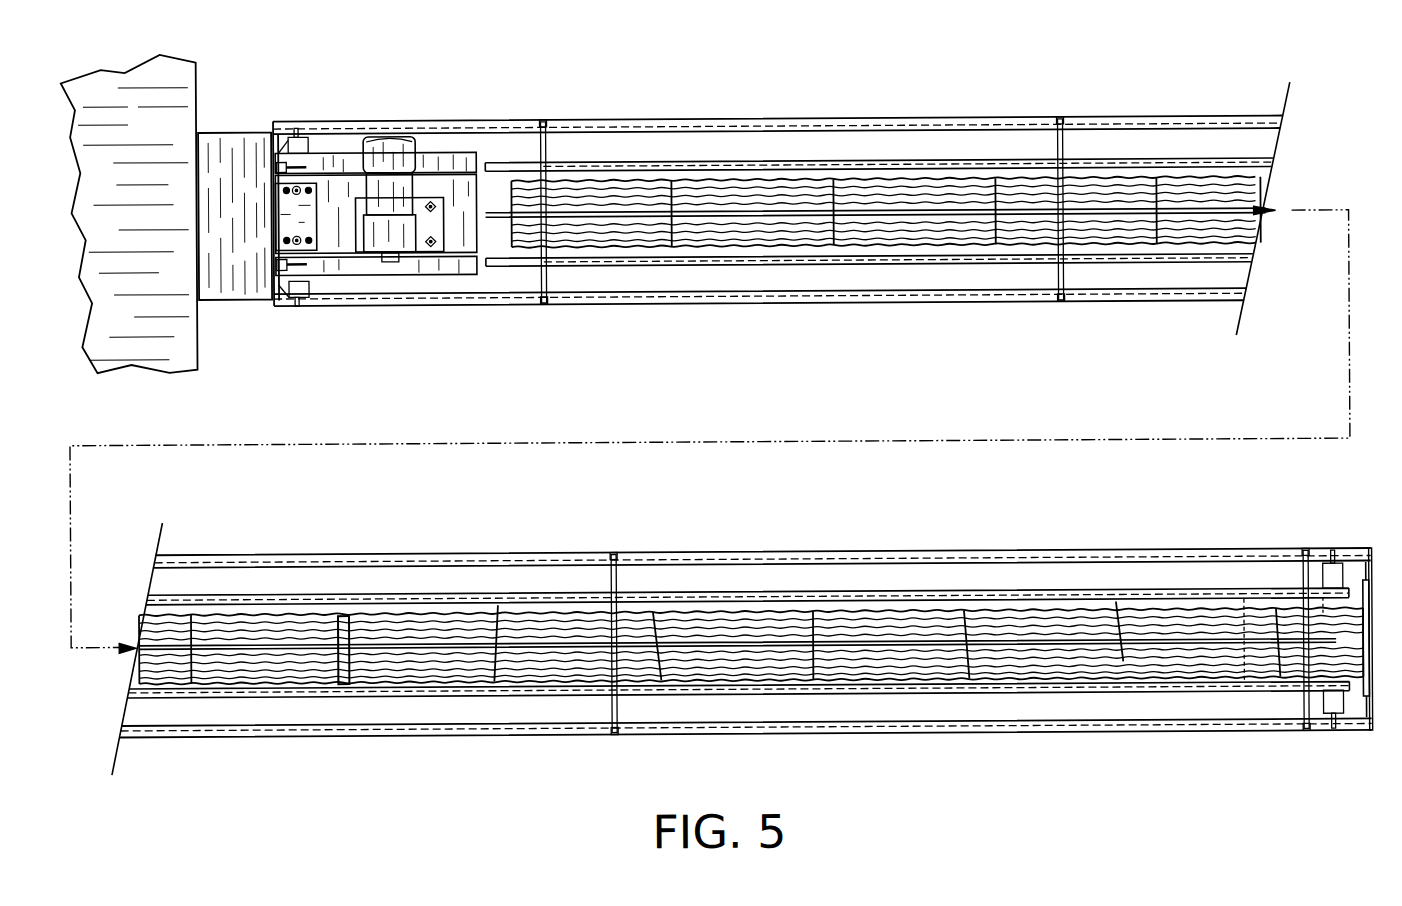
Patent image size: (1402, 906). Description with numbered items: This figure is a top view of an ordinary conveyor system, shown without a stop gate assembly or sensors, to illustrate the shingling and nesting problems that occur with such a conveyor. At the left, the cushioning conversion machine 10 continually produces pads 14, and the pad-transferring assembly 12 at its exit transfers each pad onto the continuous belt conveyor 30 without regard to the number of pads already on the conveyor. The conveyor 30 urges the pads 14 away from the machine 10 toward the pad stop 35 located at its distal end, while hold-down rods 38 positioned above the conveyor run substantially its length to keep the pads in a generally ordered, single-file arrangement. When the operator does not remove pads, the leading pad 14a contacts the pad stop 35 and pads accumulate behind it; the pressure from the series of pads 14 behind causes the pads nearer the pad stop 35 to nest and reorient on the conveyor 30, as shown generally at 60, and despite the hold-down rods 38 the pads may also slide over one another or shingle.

The cushioning conversion machine 10 is at (213, 78).
The pad-transferring assembly 12 is at (403, 112).
The continuous belt conveyor 30 is at (493, 194).
The pads 14 is at (780, 190).
The hold-down rods 38 is at (925, 214).
The nesting and reorientation of pads 60 is at (893, 544).
The leading pad 14a is at (1290, 666).
The pad stop 35 is at (1370, 647).